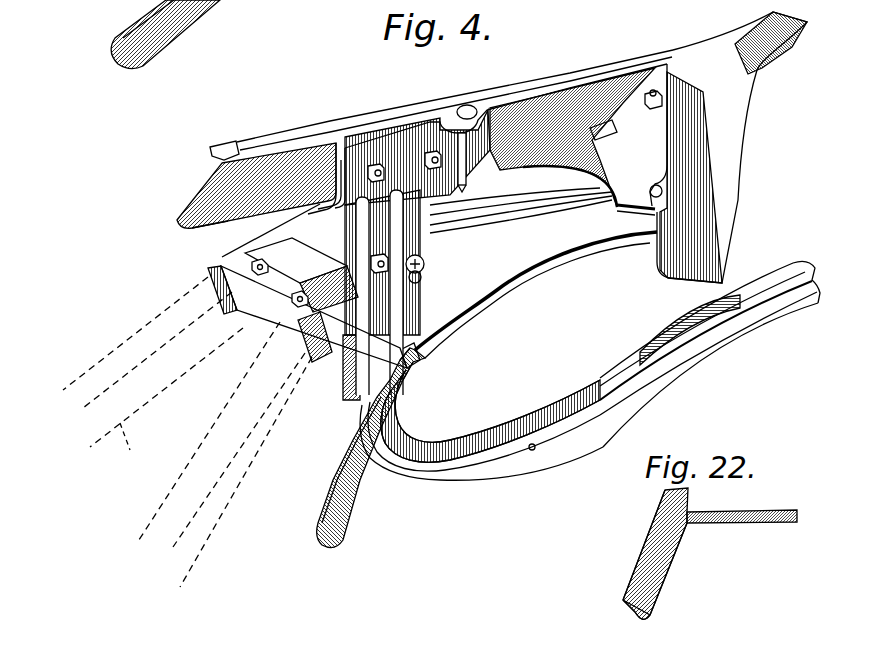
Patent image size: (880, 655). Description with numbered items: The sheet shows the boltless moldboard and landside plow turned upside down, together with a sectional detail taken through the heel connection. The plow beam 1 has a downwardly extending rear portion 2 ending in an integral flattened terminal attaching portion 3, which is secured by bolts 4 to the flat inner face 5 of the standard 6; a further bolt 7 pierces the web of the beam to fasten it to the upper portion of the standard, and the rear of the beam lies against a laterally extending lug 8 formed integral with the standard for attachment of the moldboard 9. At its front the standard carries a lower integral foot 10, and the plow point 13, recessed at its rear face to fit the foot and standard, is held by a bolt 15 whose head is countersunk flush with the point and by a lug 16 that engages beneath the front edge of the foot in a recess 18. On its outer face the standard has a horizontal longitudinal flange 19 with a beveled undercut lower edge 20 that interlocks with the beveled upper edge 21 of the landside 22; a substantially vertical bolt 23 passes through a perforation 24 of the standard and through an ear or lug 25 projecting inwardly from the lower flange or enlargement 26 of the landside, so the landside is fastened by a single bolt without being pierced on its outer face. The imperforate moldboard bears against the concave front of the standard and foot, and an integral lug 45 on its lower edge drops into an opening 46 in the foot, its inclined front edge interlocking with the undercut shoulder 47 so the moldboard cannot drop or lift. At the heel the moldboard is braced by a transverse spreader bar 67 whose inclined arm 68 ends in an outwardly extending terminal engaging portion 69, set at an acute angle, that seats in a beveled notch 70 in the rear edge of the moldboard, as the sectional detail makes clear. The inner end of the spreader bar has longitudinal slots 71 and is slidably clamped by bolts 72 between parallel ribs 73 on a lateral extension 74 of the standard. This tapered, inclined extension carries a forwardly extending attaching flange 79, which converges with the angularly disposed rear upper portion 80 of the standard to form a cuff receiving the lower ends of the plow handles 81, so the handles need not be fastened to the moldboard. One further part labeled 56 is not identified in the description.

In FIG. 4, the plow beam 1 is at (576, 386).
In FIG. 4, the downwardly extending rear portion 2 is at (377, 288).
In FIG. 4, the flattened terminal attaching portion 3 is at (381, 148).
In FIG. 4, the bolts 4 is at (386, 172).
In FIG. 4, the flat inner face 5 is at (338, 150).
In FIG. 4, the standard 6 is at (503, 120).
In FIG. 4, the bolt 7 is at (381, 295).
In FIG. 4, the laterally extending lug 8 is at (421, 275).
In FIG. 4, the moldboard 9 is at (508, 282).
In FIG. 22, the moldboard 9 is at (662, 518).
In FIG. 4, the foot 10 is at (642, 136).
In FIG. 4, the plow point 13 is at (742, 143).
In FIG. 4, the bolt 15 is at (665, 93).
In FIG. 4, the lug 16 is at (665, 192).
In FIG. 4, the recess 18 is at (642, 211).
In FIG. 4, the horizontal longitudinal flange 19 is at (317, 208).
In FIG. 4, the beveled undercut lower face 20 is at (320, 205).
In FIG. 4, the beveled upper edge 21 is at (227, 223).
In FIG. 4, the landside 22 is at (197, 183).
In FIG. 4, the vertical bolt 23 is at (440, 118).
In FIG. 4, the perforation 24 is at (488, 252).
In FIG. 4, the ear or lug 25 is at (482, 105).
In FIG. 4, the lower flange or enlargement 26 is at (222, 144).
In FIG. 4, the projecting lug 45 is at (655, 135).
In FIG. 4, the opening or recess 46 is at (592, 172).
In FIG. 4, the undercut front wall or shoulder 47 is at (620, 130).
In FIG. 4, the screw 56 is at (425, 262).
In FIG. 4, the spreader bar 67 is at (352, 412).
In FIG. 22, the spreader bar 67 is at (770, 524).
In FIG. 4, the arm 68 is at (404, 372).
In FIG. 22, the arm 68 is at (674, 572).
In FIG. 4, the terminal engaging portion 69 is at (207, 5).
In FIG. 22, the terminal engaging portion 69 is at (632, 605).
In FIG. 4, the notch or recess 70 is at (420, 345).
In FIG. 22, the notch or recess 70 is at (642, 588).
In FIG. 4, the longitudinal slots 71 is at (268, 278).
In FIG. 4, the bolts 72 is at (301, 275).
In FIG. 4, the parallel ribs 73 is at (300, 305).
In FIG. 4, the lateral extension 74 is at (258, 332).
In FIG. 4, the attaching flange 79 is at (296, 360).
In FIG. 4, the rear upper portion 80 is at (285, 317).
In FIG. 4, the plow handles 81 is at (174, 487).